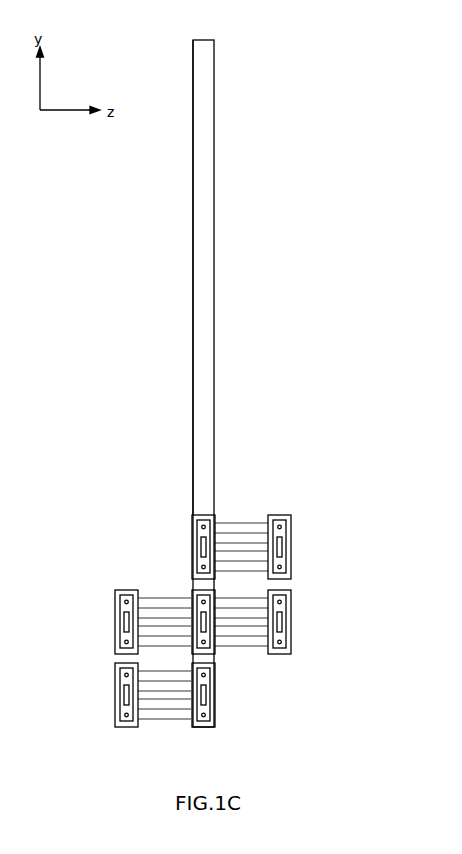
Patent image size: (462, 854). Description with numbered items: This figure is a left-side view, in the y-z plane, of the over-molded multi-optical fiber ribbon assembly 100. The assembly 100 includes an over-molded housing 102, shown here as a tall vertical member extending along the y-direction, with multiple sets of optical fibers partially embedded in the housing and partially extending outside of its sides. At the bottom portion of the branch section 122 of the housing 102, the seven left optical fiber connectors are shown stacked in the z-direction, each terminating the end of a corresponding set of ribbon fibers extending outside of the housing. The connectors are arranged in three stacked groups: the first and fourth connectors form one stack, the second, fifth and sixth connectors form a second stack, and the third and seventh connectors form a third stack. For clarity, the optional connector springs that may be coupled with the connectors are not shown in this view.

The over-molded multi-optical fiber ribbon assembly 100 is at (287, 48).
The over-molded housing 102 is at (199, 37).
The branch section 122 is at (207, 304).